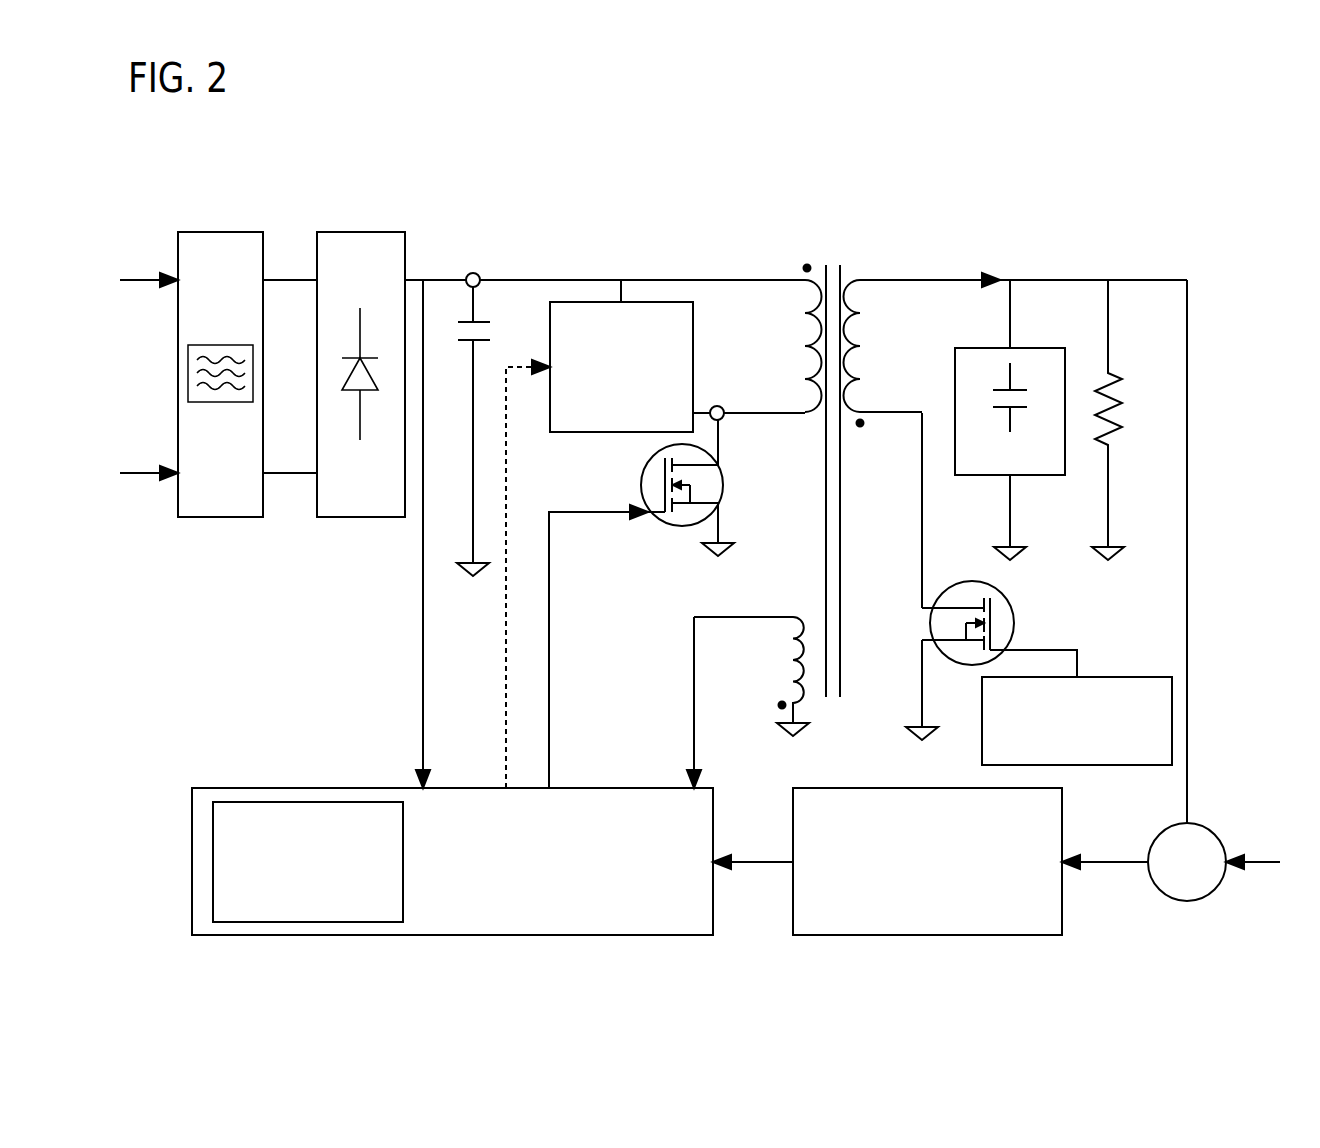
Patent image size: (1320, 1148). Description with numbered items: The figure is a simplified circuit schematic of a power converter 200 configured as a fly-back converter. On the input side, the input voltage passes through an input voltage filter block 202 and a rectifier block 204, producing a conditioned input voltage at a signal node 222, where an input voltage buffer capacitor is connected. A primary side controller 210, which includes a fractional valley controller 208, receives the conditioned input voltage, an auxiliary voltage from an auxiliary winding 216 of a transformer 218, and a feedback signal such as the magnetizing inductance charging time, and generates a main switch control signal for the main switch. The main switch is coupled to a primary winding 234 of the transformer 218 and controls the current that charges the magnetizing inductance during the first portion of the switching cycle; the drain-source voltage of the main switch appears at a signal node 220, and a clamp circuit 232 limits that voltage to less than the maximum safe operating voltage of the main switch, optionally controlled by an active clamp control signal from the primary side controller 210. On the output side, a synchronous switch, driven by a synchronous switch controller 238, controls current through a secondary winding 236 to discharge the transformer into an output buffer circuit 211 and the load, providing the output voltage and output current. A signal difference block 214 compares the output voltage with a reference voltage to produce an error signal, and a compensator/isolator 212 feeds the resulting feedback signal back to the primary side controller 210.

The power converter 200 is at (181, 188).
The input voltage filter block 202 is at (246, 509).
The rectifier block 204 is at (386, 509).
The fractional valley controller 208 is at (403, 880).
The primary side controller 210 is at (695, 924).
The output buffer circuit 211 is at (1052, 469).
The compensator/isolator 212 is at (1040, 927).
The signal difference block 214 is at (1203, 898).
The auxiliary winding 216 is at (793, 617).
The transformer 218 is at (857, 428).
The signal node 220 is at (723, 418).
The signal node 222 is at (471, 273).
The clamp circuit 232 is at (678, 422).
The primary winding 234 is at (780, 262).
The secondary winding 236 is at (837, 262).
The synchronous switch controller 238 is at (1157, 757).